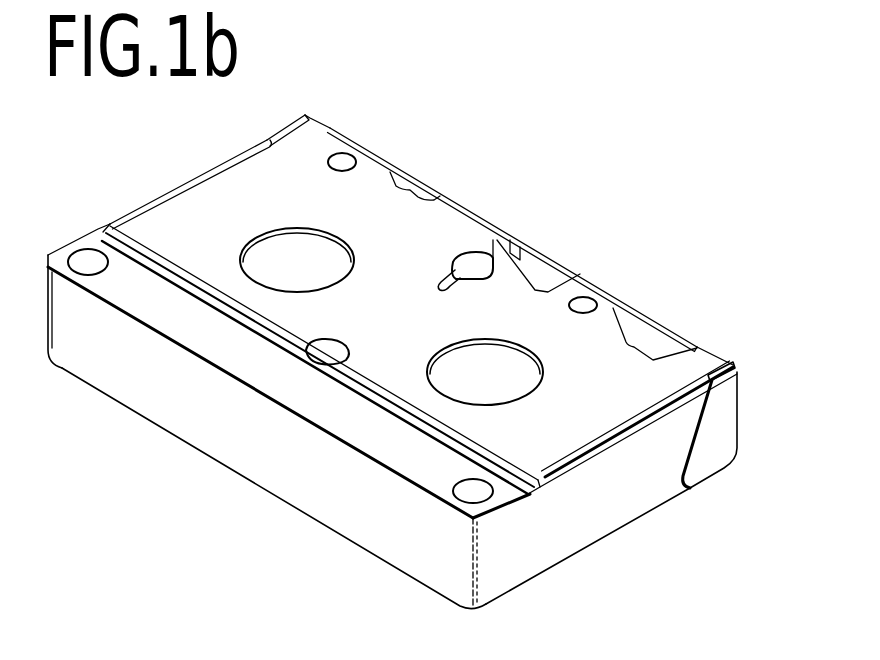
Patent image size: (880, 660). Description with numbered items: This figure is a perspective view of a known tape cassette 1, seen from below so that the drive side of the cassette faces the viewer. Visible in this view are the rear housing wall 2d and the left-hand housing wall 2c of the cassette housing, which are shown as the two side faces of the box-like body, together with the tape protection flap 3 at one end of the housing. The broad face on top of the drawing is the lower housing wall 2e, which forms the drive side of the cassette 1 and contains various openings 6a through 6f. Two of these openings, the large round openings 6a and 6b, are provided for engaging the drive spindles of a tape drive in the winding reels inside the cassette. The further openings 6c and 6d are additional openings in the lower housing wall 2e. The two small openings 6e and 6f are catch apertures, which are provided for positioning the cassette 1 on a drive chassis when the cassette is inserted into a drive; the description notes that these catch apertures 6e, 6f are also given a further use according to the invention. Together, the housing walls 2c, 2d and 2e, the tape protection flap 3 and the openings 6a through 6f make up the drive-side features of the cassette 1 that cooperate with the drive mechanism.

The cassette 1 is at (392, 416).
The left-hand housing wall 2c is at (592, 518).
The rear housing wall 2d is at (374, 532).
The lower housing wall 2e is at (417, 292).
The tape protection flap 3 is at (728, 426).
The opening 6a is at (330, 262).
The opening 6b is at (520, 382).
The opening 6c is at (304, 356).
The opening 6d is at (474, 258).
The catch aperture 6e is at (341, 160).
The catch aperture 6f is at (582, 304).